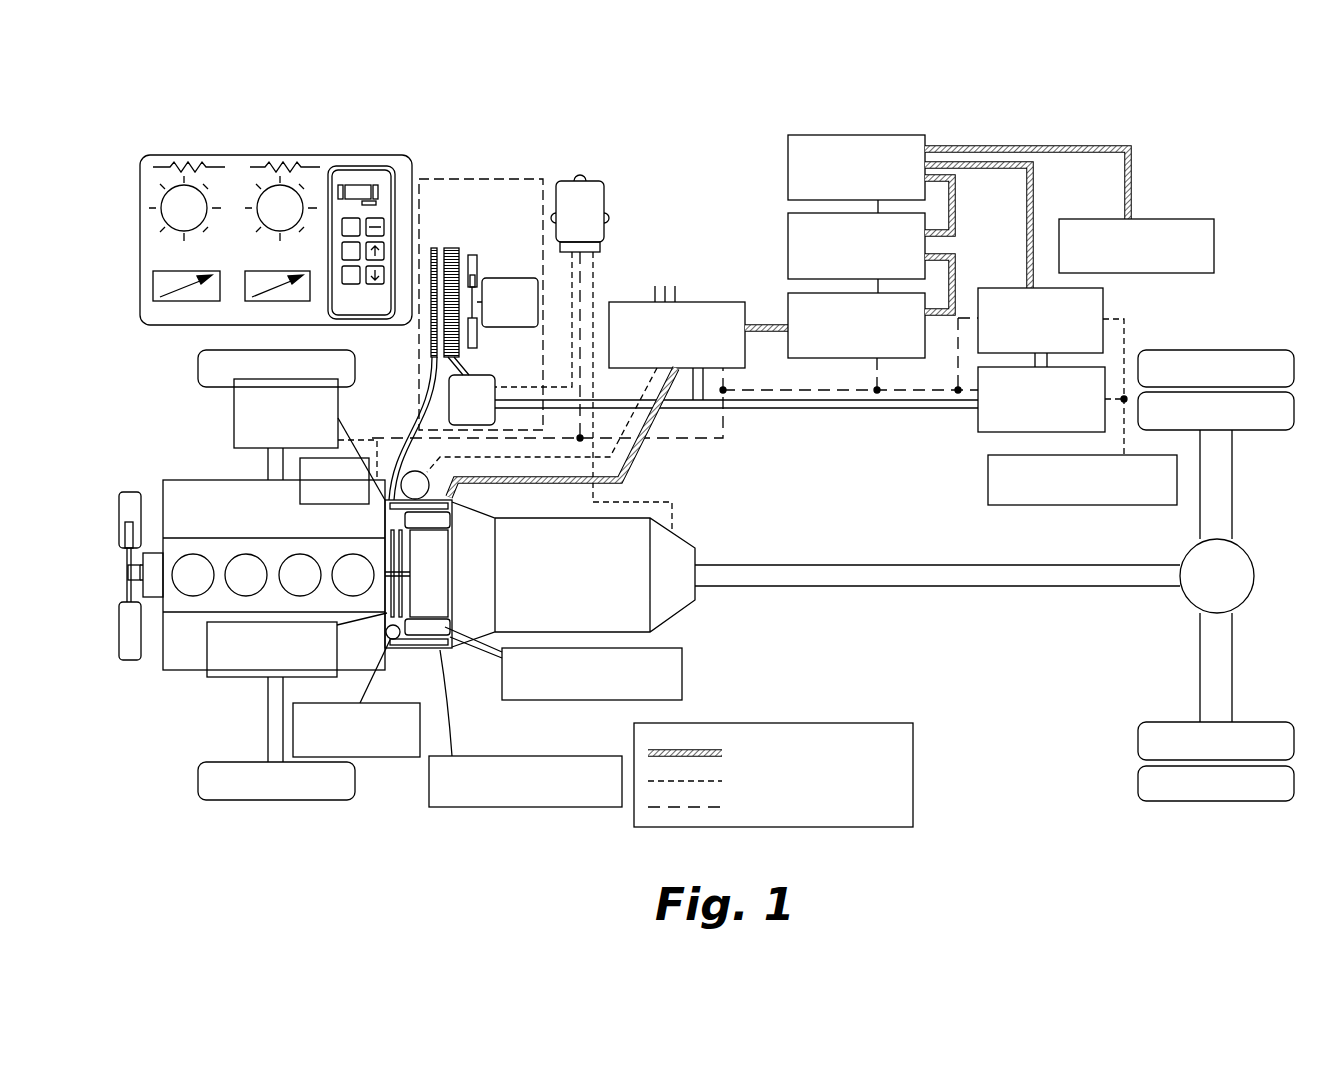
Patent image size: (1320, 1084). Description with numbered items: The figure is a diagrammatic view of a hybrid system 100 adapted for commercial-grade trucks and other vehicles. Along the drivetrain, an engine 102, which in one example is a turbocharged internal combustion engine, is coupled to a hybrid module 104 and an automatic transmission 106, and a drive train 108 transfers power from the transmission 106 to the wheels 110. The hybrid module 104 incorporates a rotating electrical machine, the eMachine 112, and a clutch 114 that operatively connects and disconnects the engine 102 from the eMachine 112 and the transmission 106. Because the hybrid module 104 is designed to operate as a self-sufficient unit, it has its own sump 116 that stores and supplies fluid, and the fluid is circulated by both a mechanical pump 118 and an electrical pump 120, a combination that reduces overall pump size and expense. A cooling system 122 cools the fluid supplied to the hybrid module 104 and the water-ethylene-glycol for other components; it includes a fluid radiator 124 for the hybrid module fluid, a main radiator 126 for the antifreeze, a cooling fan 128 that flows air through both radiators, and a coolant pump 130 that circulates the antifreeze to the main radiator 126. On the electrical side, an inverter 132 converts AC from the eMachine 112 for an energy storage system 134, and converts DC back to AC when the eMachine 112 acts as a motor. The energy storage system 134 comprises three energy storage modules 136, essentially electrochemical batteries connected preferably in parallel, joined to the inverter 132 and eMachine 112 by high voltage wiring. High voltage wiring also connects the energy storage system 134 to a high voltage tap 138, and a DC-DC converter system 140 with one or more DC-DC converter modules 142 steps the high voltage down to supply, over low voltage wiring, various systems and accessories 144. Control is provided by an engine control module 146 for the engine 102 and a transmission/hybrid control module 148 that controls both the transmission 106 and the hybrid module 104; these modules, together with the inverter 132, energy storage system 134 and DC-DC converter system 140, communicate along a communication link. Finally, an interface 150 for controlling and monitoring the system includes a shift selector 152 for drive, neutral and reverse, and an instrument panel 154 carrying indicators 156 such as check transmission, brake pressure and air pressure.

The hybrid system 100 is at (1172, 146).
The engine 102 is at (170, 480).
The hybrid module 104 is at (412, 640).
The automatic transmission 106 is at (692, 530).
The drive train 108 is at (958, 590).
The wheels 110 is at (1262, 349).
The eMachine 112 is at (456, 648).
The clutch 114 is at (388, 560).
The sump 116 is at (430, 650).
The mechanical pump 118 is at (390, 640).
The electrical pump 120 is at (408, 472).
The cooling system 122 is at (465, 178).
The fluid radiator 124 is at (433, 307).
The main radiator 126 is at (450, 262).
The cooling fan 128 is at (530, 277).
The coolant pump 130 is at (483, 374).
The inverter 132 is at (705, 301).
The energy storage system 134 is at (806, 128).
The energy storage modules 136 is at (910, 134).
The high voltage tap 138 is at (1214, 253).
The DC-DC converter system 140 is at (1120, 296).
The DC-DC converter modules 142 is at (1015, 287).
The systems and accessories 144 is at (1072, 506).
The engine control module 146 is at (300, 476).
The transmission/hybrid control module 148 is at (566, 180).
The interface 150 is at (264, 126).
The shift selector 152 is at (357, 163).
The instrument panel 154 is at (158, 186).
The indicators 156 is at (172, 232).